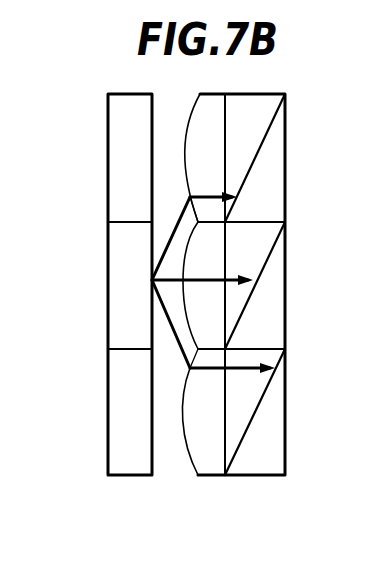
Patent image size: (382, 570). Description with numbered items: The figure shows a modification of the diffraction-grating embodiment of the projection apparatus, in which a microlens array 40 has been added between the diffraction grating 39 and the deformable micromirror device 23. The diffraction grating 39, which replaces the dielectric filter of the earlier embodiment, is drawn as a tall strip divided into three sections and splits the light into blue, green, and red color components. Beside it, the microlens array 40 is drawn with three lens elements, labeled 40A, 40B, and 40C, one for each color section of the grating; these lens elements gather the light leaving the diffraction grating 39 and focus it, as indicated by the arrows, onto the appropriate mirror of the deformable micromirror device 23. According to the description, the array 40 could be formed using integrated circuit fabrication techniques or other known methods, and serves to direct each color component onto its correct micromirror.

The diffraction grating 39 is at (130, 475).
The microlens array 40 is at (148, 320).
The first lens element 40A is at (192, 150).
The second lens element 40B is at (195, 258).
The third lens element 40C is at (195, 410).
The deformable micromirror device 23 is at (255, 475).